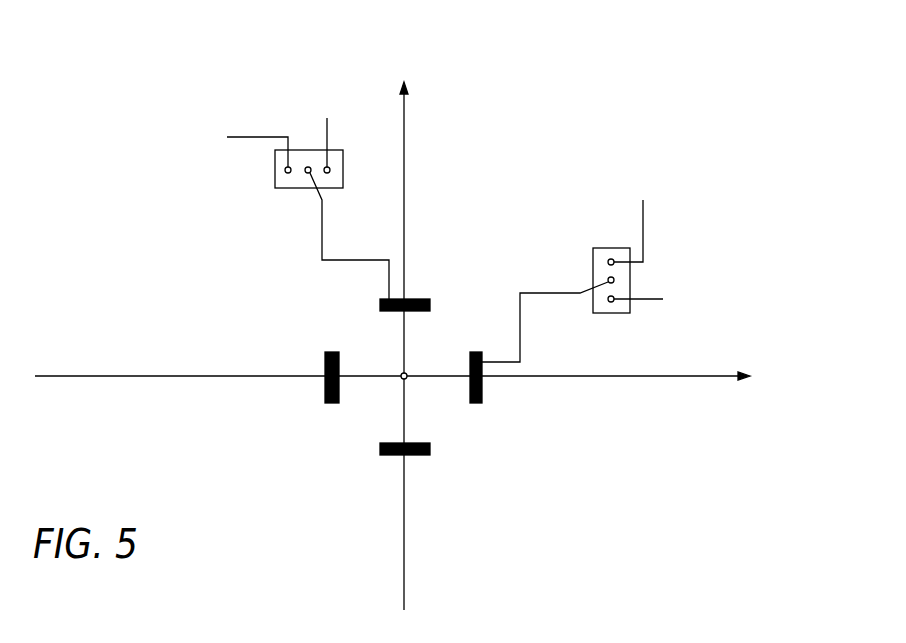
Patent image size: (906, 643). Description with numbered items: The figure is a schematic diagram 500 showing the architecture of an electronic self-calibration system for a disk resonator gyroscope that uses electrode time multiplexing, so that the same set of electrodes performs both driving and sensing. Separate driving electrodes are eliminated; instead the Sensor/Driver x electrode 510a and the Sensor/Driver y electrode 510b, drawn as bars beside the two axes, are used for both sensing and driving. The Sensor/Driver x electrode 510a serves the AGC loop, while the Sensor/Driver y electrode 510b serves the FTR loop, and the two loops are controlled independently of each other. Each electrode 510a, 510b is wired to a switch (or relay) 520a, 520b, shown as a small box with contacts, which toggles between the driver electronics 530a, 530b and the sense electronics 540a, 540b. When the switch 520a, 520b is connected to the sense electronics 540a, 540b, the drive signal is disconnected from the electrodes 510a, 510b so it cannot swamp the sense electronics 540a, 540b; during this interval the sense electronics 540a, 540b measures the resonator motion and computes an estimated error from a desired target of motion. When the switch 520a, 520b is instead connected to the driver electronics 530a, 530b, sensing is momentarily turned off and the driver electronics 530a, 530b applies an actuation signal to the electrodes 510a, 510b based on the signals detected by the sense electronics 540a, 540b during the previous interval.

The schematic diagram 500 is at (296, 482).
The Sensor/Driver x electrode 510a is at (575, 410).
The Sensor/Driver y electrode 510b is at (256, 299).
The switch 520a is at (593, 262).
The switch 520b is at (297, 189).
The driver electronics 530a is at (646, 150).
The driver electronics 530b is at (175, 115).
The sense electronics 540a is at (702, 290).
The sense electronics 540b is at (330, 65).